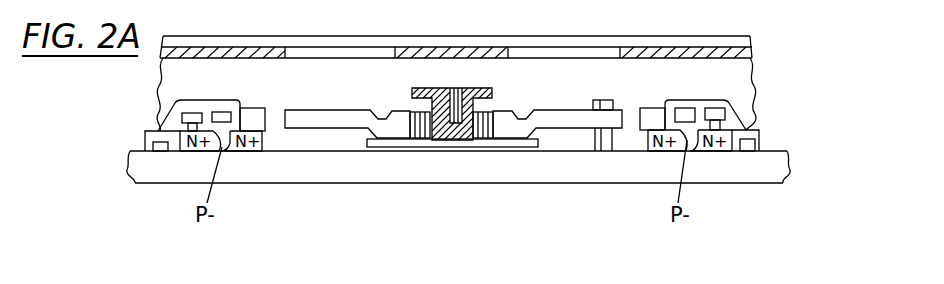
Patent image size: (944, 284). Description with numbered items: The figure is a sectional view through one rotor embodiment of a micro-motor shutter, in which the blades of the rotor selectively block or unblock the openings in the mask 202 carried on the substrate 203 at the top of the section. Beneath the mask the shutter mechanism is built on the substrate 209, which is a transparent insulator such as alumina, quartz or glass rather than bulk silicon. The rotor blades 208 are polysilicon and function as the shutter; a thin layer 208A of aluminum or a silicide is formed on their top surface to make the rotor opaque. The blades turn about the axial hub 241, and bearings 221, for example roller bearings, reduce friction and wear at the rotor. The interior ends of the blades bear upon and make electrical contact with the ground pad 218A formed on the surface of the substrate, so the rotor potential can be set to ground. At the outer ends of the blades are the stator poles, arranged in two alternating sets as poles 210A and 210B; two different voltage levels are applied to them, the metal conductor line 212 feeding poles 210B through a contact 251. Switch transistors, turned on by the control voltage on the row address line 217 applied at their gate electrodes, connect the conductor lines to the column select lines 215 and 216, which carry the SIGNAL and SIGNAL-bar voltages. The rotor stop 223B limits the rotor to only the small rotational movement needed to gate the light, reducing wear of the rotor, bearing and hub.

The mask 202 is at (215, 55).
The substrate 203 is at (630, 42).
The rotor blades 208 is at (320, 122).
The thin layer 208A is at (545, 112).
The substrate 209 is at (297, 168).
The stator poles 210A is at (257, 95).
The stator poles 210B is at (648, 120).
The metal conductor line 212 is at (716, 114).
The column select line 215 is at (153, 145).
The column select line 216 is at (750, 142).
The row address line 217 is at (688, 108).
The ground pad 218A is at (458, 143).
The bearings 221 is at (410, 112).
The rotor stop 223B is at (596, 100).
The axial hub 241 is at (492, 90).
The contact 251 is at (186, 127).